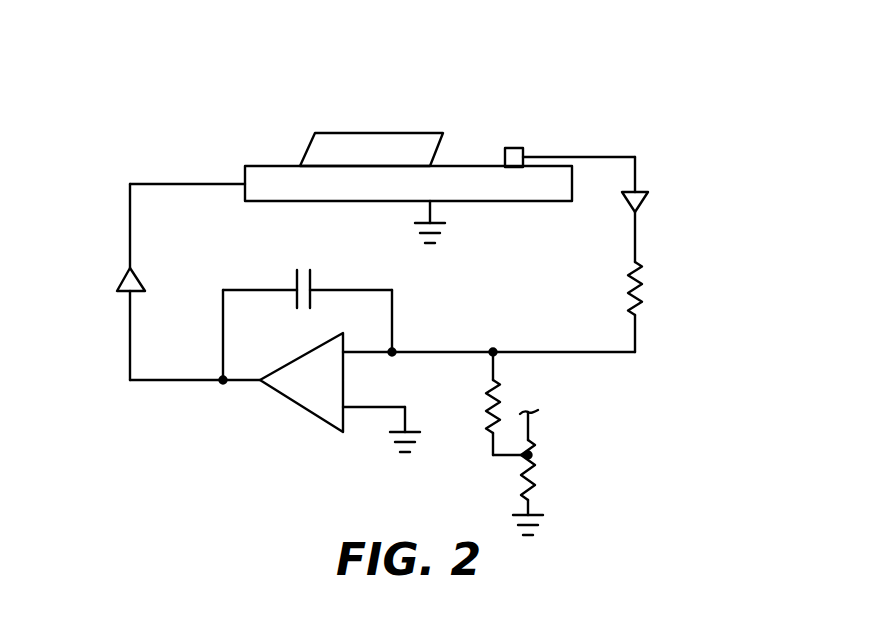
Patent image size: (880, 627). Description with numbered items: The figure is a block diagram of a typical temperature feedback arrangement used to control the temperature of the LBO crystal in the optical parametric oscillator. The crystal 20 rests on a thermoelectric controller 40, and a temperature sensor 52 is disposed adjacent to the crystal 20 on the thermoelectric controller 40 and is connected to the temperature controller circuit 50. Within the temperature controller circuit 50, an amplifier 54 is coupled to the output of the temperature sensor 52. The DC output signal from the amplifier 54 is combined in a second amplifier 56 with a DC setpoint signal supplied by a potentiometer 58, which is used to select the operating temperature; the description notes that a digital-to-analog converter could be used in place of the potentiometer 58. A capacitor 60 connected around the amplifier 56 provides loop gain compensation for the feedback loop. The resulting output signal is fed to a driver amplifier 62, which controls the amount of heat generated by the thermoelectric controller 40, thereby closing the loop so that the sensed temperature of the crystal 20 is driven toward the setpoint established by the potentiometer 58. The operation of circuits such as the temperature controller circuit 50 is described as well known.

The crystal 20 is at (363, 133).
The thermoelectric controller 40 is at (490, 201).
The temperature controller circuit 50 is at (660, 92).
The temperature sensor 52 is at (520, 148).
The amplifier 54 is at (643, 202).
The amplifier 56 is at (293, 403).
The potentiometer 58 is at (532, 458).
The capacitor 60 is at (297, 277).
The driver amplifier 62 is at (125, 273).